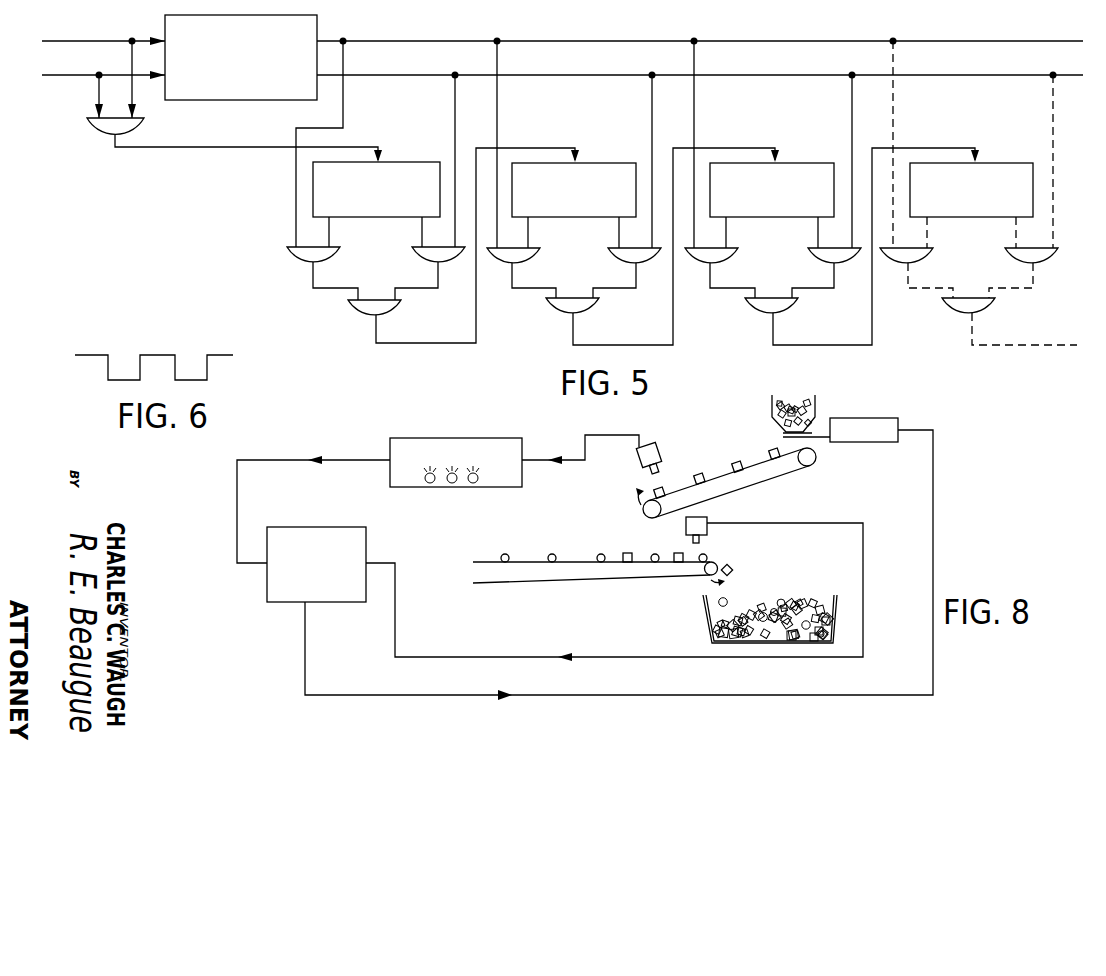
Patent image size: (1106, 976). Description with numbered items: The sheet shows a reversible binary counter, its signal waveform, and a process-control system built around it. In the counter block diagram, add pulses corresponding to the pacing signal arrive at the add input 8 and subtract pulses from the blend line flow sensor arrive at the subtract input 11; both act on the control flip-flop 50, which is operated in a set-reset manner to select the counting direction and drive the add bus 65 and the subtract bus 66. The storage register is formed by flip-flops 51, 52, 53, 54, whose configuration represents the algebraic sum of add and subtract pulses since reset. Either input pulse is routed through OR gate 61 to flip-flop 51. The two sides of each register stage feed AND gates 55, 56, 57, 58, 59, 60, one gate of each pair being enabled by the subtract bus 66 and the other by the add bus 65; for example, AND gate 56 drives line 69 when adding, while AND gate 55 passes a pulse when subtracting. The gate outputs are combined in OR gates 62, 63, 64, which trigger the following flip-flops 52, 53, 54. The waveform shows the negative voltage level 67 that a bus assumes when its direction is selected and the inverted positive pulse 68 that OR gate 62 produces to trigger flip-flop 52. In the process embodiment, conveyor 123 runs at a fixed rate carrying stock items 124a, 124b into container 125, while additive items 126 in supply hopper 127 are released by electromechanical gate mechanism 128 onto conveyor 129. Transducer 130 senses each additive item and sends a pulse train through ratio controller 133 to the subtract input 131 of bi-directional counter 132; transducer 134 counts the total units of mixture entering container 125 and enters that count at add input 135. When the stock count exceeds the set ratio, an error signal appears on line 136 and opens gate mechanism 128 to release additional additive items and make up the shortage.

In FIG. 5, the add input 8 is at (67, 75).
In FIG. 5, the subtract input 11 is at (77, 41).
In FIG. 5, the control flip-flop 50 is at (308, 24).
In FIG. 5, the flip-flop 51 is at (388, 167).
In FIG. 5, the flip-flop 52 is at (597, 170).
In FIG. 5, the flip-flop 53 is at (783, 170).
In FIG. 5, the flip-flop 54 is at (990, 172).
In FIG. 5, the AND gate 55 is at (310, 258).
In FIG. 5, the AND gate 56 is at (432, 256).
In FIG. 5, the AND gate 57 is at (515, 256).
In FIG. 5, the AND gate 58 is at (620, 253).
In FIG. 5, the AND gate 59 is at (715, 256).
In FIG. 5, the AND gate 60 is at (812, 254).
In FIG. 5, the OR gate 61 is at (95, 133).
In FIG. 5, the OR gate 62 is at (362, 308).
In FIG. 5, the OR gate 63 is at (575, 310).
In FIG. 5, the OR gate 64 is at (772, 309).
In FIG. 5, the add bus 65 is at (385, 75).
In FIG. 5, the subtract bus 66 is at (385, 41).
In FIG. 6, the negative voltage level 67 is at (108, 380).
In FIG. 6, the positive pulse 68 is at (175, 355).
In FIG. 5, the output line 69 is at (430, 290).
In FIG. 8, the conveyor 123 is at (596, 580).
In FIG. 8, the stock item 124a is at (508, 554).
In FIG. 8, the stock item 124b is at (555, 556).
In FIG. 8, the container 125 is at (836, 612).
In FIG. 8, the additive items 126 is at (796, 400).
In FIG. 8, the supply hopper 127 is at (815, 403).
In FIG. 8, the electromechanical gate mechanism 128 is at (855, 428).
In FIG. 8, the conveyor 129 is at (775, 462).
In FIG. 8, the transducer 130 is at (660, 445).
In FIG. 8, the subtract input 131 is at (262, 565).
In FIG. 8, the bi-directional counter 132 is at (310, 547).
In FIG. 8, the ratio controller 133 is at (435, 455).
In FIG. 8, the transducer 134 is at (712, 516).
In FIG. 8, the add input 135 is at (371, 562).
In FIG. 8, the output line 136 is at (305, 605).